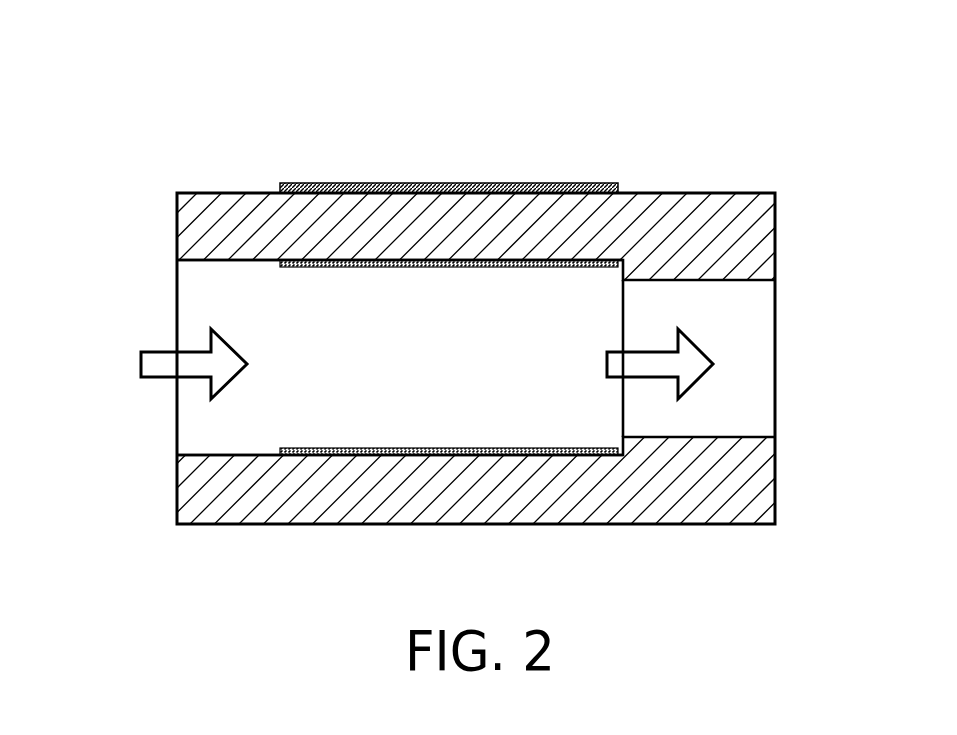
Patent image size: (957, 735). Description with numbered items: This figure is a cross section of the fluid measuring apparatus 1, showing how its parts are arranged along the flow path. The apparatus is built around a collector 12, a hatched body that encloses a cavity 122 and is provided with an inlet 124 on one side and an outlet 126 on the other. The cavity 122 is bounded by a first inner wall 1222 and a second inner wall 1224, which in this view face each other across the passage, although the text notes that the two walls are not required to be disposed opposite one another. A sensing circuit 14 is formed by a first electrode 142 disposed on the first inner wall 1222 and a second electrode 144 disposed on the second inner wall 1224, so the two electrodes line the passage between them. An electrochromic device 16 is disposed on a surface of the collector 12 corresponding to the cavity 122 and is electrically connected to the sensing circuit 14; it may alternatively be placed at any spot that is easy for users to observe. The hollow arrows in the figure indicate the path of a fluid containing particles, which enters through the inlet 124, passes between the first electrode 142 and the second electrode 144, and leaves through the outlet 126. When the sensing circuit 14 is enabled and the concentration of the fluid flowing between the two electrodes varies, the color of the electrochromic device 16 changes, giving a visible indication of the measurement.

The fluid measuring apparatus 1 is at (832, 114).
The collector 12 is at (254, 201).
The cavity 122 is at (340, 415).
The first inner wall 1222 is at (237, 262).
The second inner wall 1224 is at (238, 453).
The inlet 124 is at (198, 322).
The outlet 126 is at (663, 303).
The sensing circuit 14 is at (449, 357).
The first electrode 142 is at (472, 267).
The second electrode 144 is at (467, 453).
The electrochromic device 16 is at (357, 188).